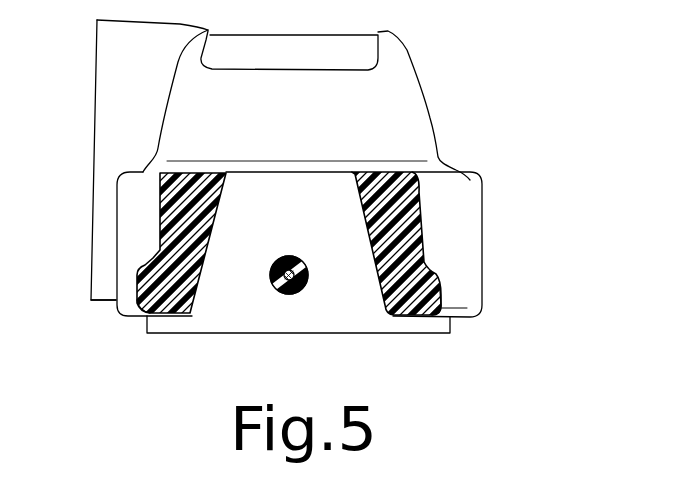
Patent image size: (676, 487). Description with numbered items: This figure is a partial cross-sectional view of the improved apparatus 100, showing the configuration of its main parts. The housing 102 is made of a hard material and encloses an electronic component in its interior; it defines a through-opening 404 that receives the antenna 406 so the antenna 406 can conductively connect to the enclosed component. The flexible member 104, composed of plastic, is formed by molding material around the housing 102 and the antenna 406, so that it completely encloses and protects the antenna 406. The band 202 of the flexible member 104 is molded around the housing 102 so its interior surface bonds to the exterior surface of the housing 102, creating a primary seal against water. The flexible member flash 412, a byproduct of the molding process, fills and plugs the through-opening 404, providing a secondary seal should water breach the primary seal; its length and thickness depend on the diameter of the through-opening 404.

The improved apparatus 100 is at (492, 98).
The housing 102 is at (220, 295).
The flexible member 104 is at (160, 233).
The band 202 is at (147, 306).
The through-opening 404 is at (281, 290).
The antenna 406 is at (307, 275).
The flexible member flash 412 is at (283, 289).